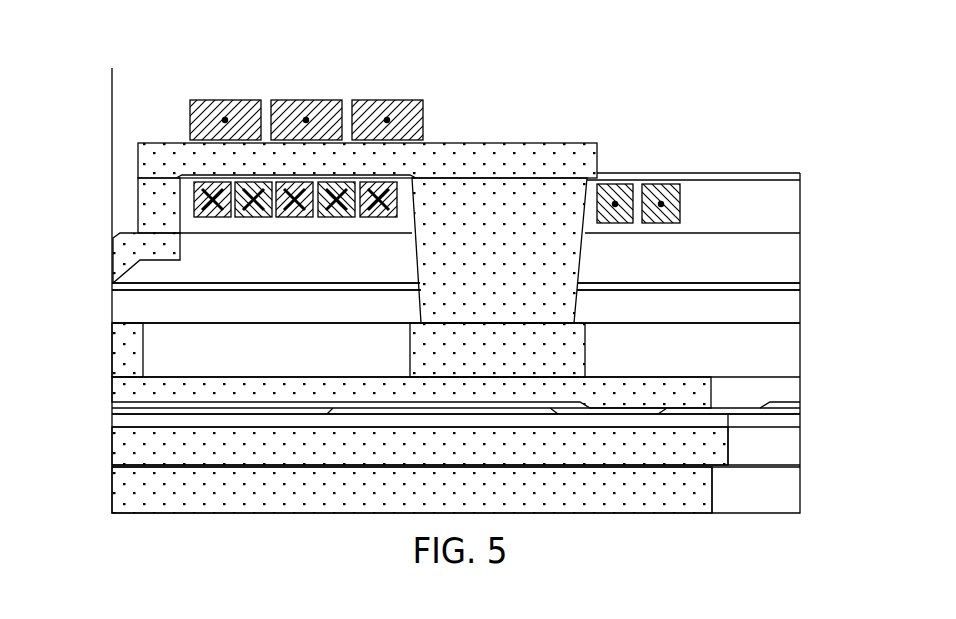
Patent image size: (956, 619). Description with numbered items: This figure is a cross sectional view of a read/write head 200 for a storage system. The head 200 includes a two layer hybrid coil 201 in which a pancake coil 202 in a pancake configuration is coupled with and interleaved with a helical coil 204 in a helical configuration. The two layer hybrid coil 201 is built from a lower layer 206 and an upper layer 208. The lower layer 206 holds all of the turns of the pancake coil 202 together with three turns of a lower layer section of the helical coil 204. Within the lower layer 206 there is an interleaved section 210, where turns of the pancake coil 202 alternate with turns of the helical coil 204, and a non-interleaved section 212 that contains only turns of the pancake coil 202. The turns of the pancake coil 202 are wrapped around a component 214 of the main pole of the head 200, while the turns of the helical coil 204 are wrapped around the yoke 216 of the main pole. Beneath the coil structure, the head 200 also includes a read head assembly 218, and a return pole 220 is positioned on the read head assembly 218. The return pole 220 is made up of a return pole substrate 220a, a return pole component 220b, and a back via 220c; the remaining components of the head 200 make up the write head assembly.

The read/write head 200 is at (763, 146).
The two layer hybrid coil 201 is at (276, 91).
The pancake coil 202 is at (680, 207).
The helical coil 204 is at (309, 98).
The lower layer 206 is at (416, 234).
The upper layer 208 is at (228, 91).
The interleaved section 210 is at (195, 218).
The non-interleaved section 212 is at (680, 229).
The component of the main pole 214 is at (572, 187).
The yoke 216 is at (497, 142).
The read head assembly 218 is at (102, 402).
The return pole 220 is at (413, 345).
The return pole substrate 220a is at (683, 382).
The return pole component 220b is at (587, 353).
The back via 220c is at (573, 308).